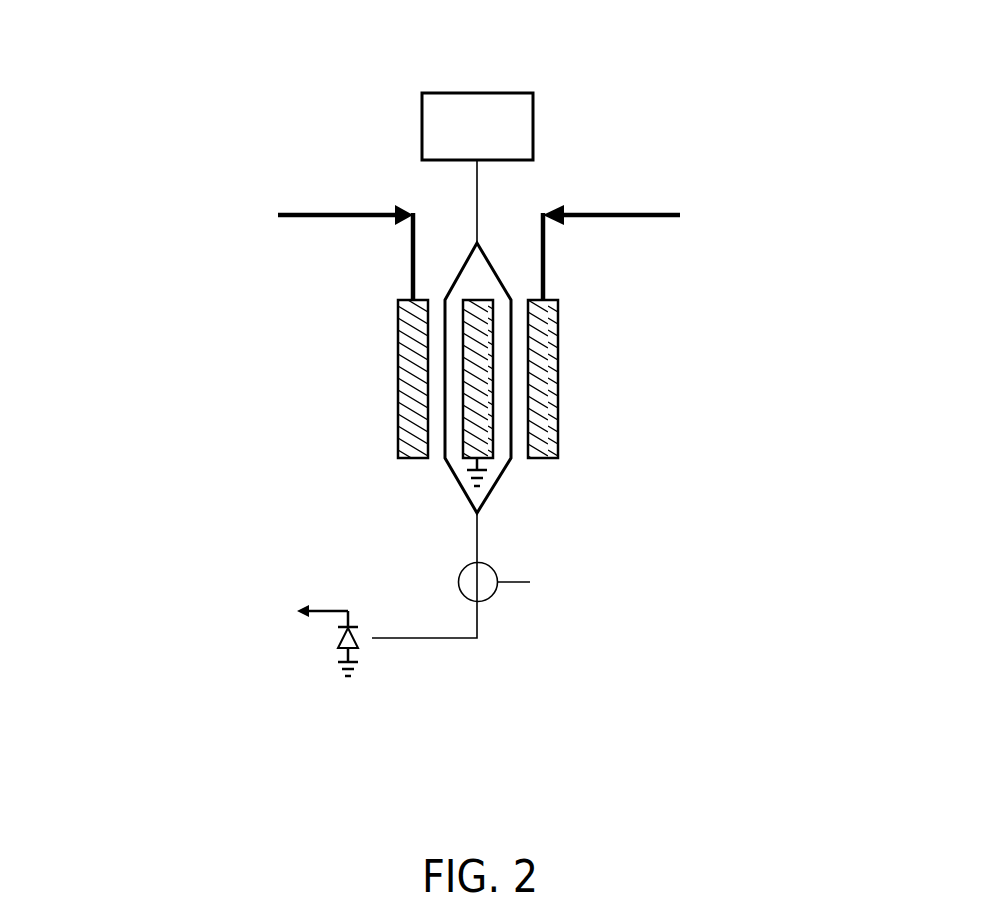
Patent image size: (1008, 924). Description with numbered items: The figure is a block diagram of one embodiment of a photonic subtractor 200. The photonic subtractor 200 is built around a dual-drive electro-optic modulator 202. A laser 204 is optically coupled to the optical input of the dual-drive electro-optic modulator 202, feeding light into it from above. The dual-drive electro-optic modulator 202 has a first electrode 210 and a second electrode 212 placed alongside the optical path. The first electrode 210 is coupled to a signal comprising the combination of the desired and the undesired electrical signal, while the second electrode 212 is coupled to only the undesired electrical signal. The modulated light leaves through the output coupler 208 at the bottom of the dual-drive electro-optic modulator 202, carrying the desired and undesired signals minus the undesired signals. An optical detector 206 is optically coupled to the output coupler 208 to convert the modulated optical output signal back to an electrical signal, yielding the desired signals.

The photonic subtractor 200 is at (787, 76).
The dual-drive electro-optic modulator 202 is at (485, 359).
The laser 204 is at (477, 92).
The optical detector 206 is at (374, 651).
The output coupler 208 is at (477, 527).
The first electrode 210 is at (398, 380).
The second electrode 212 is at (558, 378).